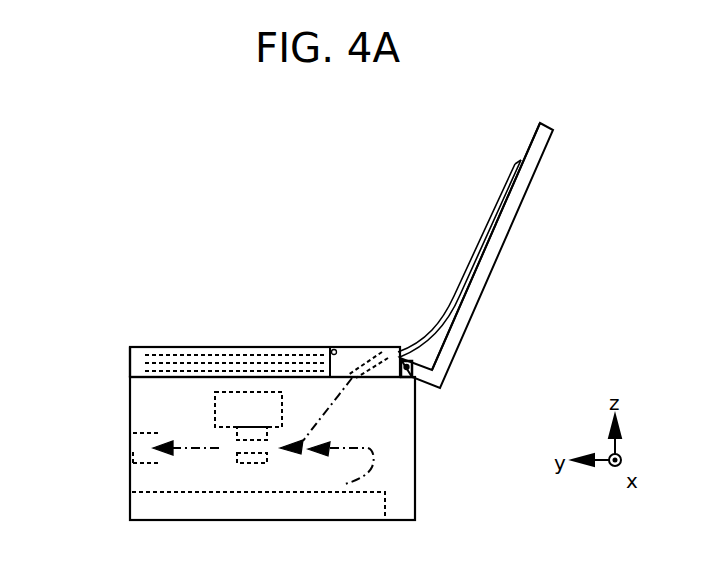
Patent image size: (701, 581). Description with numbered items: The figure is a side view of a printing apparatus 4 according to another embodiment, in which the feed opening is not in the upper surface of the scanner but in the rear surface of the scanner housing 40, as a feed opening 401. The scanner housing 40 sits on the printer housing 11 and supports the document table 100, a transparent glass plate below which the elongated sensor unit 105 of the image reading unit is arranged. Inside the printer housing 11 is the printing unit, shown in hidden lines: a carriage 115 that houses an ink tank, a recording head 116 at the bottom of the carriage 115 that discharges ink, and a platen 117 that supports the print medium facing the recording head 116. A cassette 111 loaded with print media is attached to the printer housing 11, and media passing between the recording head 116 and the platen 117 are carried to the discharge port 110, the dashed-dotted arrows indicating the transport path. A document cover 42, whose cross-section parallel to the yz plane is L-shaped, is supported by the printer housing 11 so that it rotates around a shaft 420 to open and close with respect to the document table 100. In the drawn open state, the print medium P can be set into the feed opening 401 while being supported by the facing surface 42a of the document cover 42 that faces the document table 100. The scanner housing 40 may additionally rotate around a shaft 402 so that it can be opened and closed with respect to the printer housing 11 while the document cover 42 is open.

The printing apparatus 4 is at (198, 217).
The printer housing 11 is at (402, 465).
The scanner housing 40 is at (375, 347).
The feed opening 401 is at (411, 347).
The shaft 402 is at (337, 347).
The document cover 42 is at (500, 240).
The facing surface 42a is at (530, 150).
The shaft 420 is at (411, 380).
The document table 100 is at (155, 346).
The sensor unit 105 is at (137, 364).
The discharge port 110 is at (130, 454).
The cassette 111 is at (128, 510).
The carriage 115 is at (215, 405).
The recording head 116 is at (237, 440).
The platen 117 is at (240, 463).
The print medium P is at (508, 188).